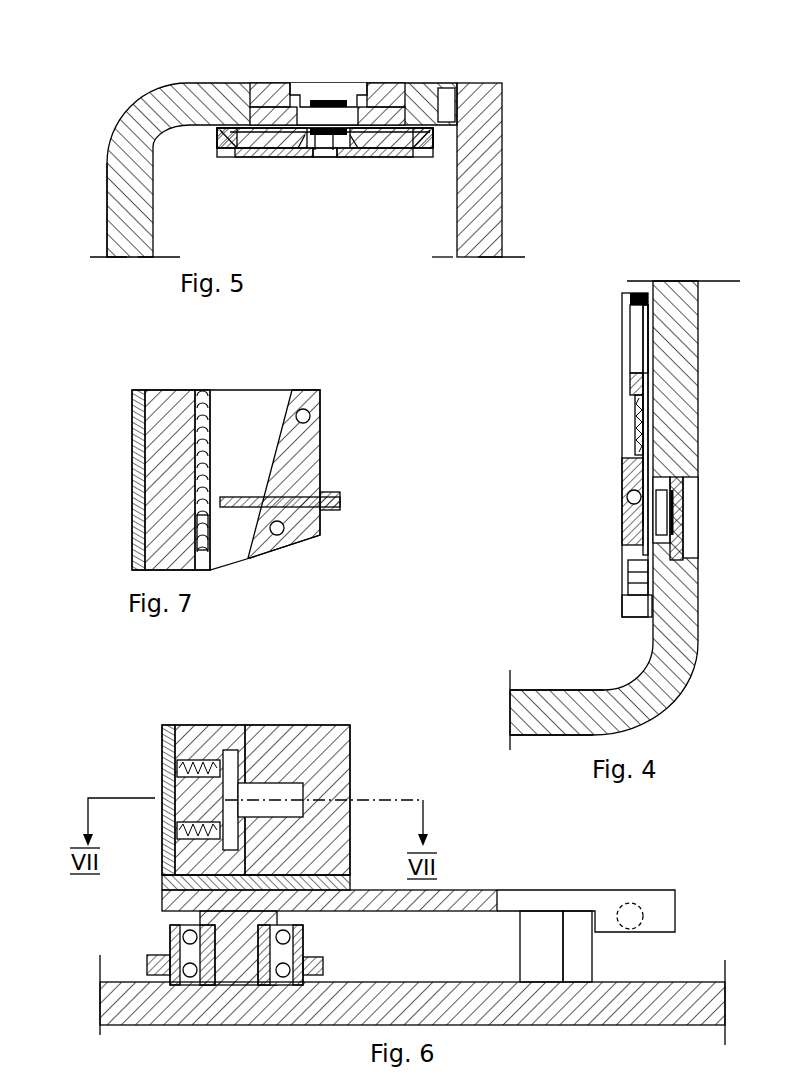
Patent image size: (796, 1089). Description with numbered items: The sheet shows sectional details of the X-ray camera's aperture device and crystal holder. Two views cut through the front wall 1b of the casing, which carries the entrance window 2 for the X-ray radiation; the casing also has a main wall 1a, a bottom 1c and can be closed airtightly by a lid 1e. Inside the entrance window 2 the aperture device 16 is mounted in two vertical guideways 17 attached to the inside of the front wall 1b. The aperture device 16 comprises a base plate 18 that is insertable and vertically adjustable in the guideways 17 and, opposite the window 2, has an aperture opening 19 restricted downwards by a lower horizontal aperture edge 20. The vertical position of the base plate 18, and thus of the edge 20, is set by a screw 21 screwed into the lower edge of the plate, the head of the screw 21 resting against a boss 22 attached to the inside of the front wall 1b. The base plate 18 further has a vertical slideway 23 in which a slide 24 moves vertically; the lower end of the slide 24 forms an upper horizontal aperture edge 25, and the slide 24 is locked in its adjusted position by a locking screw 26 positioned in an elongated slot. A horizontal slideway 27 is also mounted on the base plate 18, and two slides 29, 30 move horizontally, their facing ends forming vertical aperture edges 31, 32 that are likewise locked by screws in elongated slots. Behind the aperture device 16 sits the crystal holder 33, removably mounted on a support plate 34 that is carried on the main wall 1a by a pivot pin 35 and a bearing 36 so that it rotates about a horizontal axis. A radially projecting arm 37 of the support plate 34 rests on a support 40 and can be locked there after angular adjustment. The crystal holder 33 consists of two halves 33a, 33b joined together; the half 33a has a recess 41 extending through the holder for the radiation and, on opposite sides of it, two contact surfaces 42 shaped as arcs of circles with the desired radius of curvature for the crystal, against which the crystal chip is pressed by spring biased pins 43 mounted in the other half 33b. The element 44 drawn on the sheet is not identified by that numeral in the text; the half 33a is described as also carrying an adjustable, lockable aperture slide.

In FIG. 5, the main wall 1a is at (107, 208).
In FIG. 6, the main wall 1a is at (446, 995).
In FIG. 5, the front wall 1b is at (228, 92).
In FIG. 4, the front wall 1b is at (682, 381).
In FIG. 4, the bottom 1c is at (548, 720).
In FIG. 5, the lid 1e is at (493, 213).
In FIG. 5, the entrance window 2 is at (332, 100).
In FIG. 4, the entrance window 2 is at (656, 540).
In FIG. 5, the aperture device 16 is at (353, 166).
In FIG. 4, the aperture device 16 is at (612, 423).
In FIG. 5, the vertical guideways 17 is at (227, 148).
In FIG. 4, the vertical guideways 17 is at (638, 298).
In FIG. 5, the base plate 18 is at (388, 148).
In FIG. 4, the base plate 18 is at (640, 345).
In FIG. 5, the aperture opening 19 is at (333, 150).
In FIG. 4, the aperture opening 19 is at (645, 516).
In FIG. 4, the lower horizontal aperture edge 20 is at (670, 537).
In FIG. 4, the screw 21 is at (633, 580).
In FIG. 4, the boss 22 is at (637, 617).
In FIG. 4, the vertical slideway 23 is at (635, 322).
In FIG. 5, the slide 24 is at (307, 148).
In FIG. 4, the slide 24 is at (630, 456).
In FIG. 4, the upper horizontal aperture edge 25 is at (633, 497).
In FIG. 4, the locking screw 26 is at (630, 425).
In FIG. 4, the horizontal slideway 27 is at (622, 467).
In FIG. 5, the slide 29 is at (253, 157).
In FIG. 5, the slide 30 is at (368, 157).
In FIG. 5, the vertical aperture edge 31 is at (315, 150).
In FIG. 5, the vertical aperture edge 32 is at (337, 157).
In FIG. 7, the crystal holder 33 is at (325, 423).
In FIG. 6, the crystal holder 33 is at (362, 738).
In FIG. 7, the crystal holder half 33a is at (312, 460).
In FIG. 6, the crystal holder half 33a is at (318, 730).
In FIG. 7, the crystal holder half 33b is at (155, 425).
In FIG. 6, the crystal holder half 33b is at (198, 730).
In FIG. 6, the support plate 34 is at (183, 897).
In FIG. 6, the pivot pin 35 is at (242, 960).
In FIG. 6, the bearing 36 is at (305, 950).
In FIG. 6, the arm 37 is at (482, 900).
In FIG. 6, the support 40 is at (540, 953).
In FIG. 7, the recess 41 is at (243, 405).
In FIG. 6, the recess 41 is at (290, 790).
In FIG. 7, the contact surfaces 42 is at (210, 442).
In FIG. 6, the contact surfaces 42 is at (237, 772).
In FIG. 7, the spring biased pins 43 is at (212, 520).
In FIG. 6, the spring biased pins 43 is at (215, 767).
In FIG. 7, the plate 44 is at (330, 510).